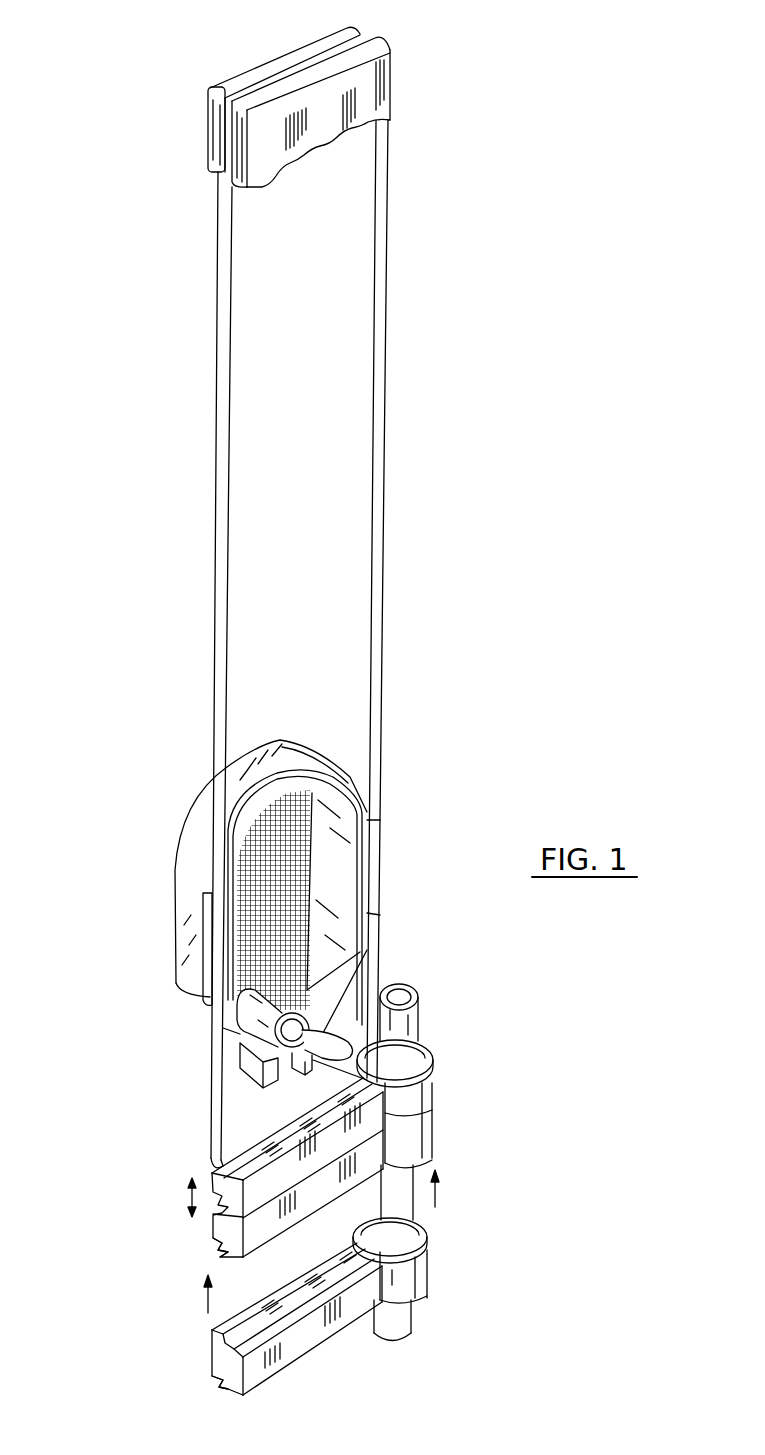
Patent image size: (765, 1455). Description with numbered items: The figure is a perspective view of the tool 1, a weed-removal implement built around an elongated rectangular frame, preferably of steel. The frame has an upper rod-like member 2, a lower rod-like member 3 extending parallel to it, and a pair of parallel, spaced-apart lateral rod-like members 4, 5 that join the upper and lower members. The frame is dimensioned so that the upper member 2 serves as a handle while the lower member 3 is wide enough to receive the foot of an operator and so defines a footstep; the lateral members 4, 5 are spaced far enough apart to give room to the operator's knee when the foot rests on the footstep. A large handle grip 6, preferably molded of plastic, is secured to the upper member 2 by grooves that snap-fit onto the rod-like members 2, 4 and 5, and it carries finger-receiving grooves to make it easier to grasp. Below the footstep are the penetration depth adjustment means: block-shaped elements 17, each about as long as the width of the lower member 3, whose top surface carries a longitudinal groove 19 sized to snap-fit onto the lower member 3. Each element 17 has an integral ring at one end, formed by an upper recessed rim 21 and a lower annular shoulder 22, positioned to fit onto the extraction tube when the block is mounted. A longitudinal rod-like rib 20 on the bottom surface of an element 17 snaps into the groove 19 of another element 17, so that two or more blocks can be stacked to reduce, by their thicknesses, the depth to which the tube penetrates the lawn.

The tool 1 is at (455, 503).
The upper rod-like member 2 is at (380, 30).
The lower rod-like member 3 is at (273, 1132).
The lateral rod-like member 4 is at (217, 533).
The lateral rod-like member 5 is at (382, 640).
The handle grip 6 is at (258, 67).
The block-shaped element 17 is at (215, 1198).
The longitudinal groove 19 is at (212, 1340).
The longitudinal rod-like rib 20 is at (225, 1253).
The upper recessed rim 21 is at (428, 1046).
The lower annular shoulder 22 is at (428, 1293).